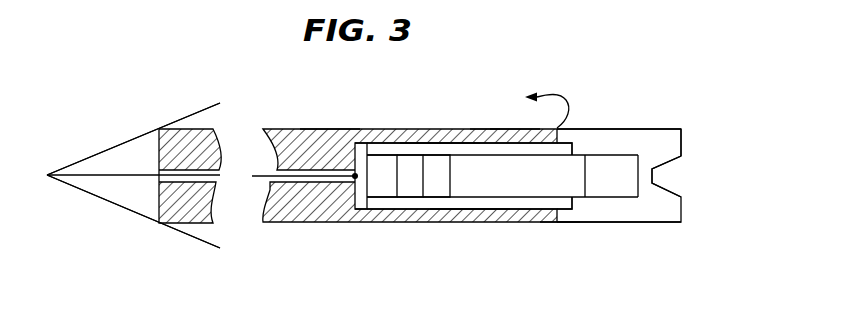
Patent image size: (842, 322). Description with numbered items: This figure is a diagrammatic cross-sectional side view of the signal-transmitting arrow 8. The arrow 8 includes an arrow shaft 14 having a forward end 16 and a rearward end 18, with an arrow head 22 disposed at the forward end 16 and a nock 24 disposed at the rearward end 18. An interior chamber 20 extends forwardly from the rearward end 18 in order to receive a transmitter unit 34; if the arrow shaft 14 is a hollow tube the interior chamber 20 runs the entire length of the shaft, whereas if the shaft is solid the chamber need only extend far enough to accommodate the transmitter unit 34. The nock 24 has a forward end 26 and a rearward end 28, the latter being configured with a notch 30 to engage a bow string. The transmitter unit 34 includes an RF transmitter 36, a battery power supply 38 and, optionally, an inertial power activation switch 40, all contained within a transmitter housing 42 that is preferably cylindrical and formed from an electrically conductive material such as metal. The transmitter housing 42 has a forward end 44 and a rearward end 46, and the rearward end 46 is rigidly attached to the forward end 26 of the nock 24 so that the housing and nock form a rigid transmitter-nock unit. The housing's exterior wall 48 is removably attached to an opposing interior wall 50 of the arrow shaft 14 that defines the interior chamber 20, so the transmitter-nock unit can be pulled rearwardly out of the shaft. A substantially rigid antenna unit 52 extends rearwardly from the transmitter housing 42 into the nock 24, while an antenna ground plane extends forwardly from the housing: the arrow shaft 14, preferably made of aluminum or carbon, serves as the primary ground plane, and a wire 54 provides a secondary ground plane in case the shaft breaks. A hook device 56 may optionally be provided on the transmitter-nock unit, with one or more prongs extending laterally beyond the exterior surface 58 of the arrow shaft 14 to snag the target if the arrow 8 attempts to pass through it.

The arrow 8 is at (522, 44).
The arrow shaft 14 is at (298, 223).
The forward end 16 is at (160, 215).
The rearward end 18 is at (560, 223).
The interior chamber 20 is at (517, 128).
The arrow head 22 is at (100, 153).
The nock 24 is at (651, 140).
The forward end 26 is at (553, 148).
The rearward end 28 is at (682, 143).
The notch 30 is at (670, 162).
The transmitter unit 34 is at (484, 127).
The RF transmitter 36 is at (505, 187).
The battery power supply 38 is at (383, 170).
The inertial power activation switch 40 is at (434, 188).
The transmitter housing 42 is at (468, 203).
The forward end 44 is at (363, 210).
The rearward end 46 is at (573, 207).
The exterior wall 48 is at (440, 147).
The interior wall 50 is at (411, 167).
The antenna unit 52 is at (620, 187).
The wire 54 is at (278, 183).
The hook device 56 is at (568, 103).
The exterior surface 58 is at (331, 129).